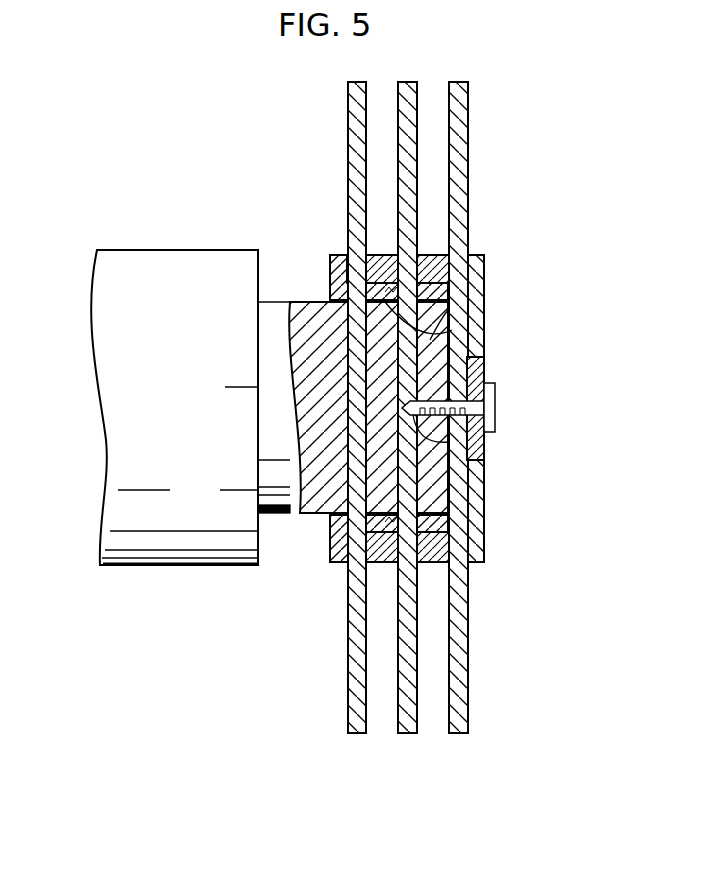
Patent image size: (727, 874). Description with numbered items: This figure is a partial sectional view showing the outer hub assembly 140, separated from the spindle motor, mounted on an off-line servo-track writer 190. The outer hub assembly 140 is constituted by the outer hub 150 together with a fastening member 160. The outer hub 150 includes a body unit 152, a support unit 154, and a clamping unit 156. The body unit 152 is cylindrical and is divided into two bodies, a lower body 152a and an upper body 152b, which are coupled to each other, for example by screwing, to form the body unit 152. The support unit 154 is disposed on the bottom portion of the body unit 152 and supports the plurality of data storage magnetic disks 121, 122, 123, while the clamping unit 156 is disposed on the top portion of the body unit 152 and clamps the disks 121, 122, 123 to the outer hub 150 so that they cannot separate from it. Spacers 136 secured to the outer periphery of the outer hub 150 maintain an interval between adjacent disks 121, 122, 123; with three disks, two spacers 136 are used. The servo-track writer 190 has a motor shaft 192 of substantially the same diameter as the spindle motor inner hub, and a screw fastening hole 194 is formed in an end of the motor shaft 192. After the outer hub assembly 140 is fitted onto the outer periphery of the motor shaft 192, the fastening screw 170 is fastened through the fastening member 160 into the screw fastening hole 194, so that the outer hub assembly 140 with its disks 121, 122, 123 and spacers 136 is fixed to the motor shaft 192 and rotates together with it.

The data storage magnetic disk 121 is at (352, 733).
The data storage magnetic disk 122 is at (405, 733).
The data storage magnetic disk 123 is at (458, 733).
The spacer 136 is at (352, 597).
The outer hub assembly 140 is at (456, 456).
The outer hub 150 is at (497, 522).
The body unit 152 is at (594, 285).
The lower body 152a is at (452, 328).
The upper body 152b is at (445, 306).
The support unit 154 is at (332, 257).
The clamping unit 156 is at (485, 263).
The fastening member 160 is at (484, 376).
The fastening screw 170 is at (496, 412).
The off-line servo-track writer 190 is at (90, 592).
The motor shaft 192 is at (307, 517).
The screw fastening hole 194 is at (484, 448).